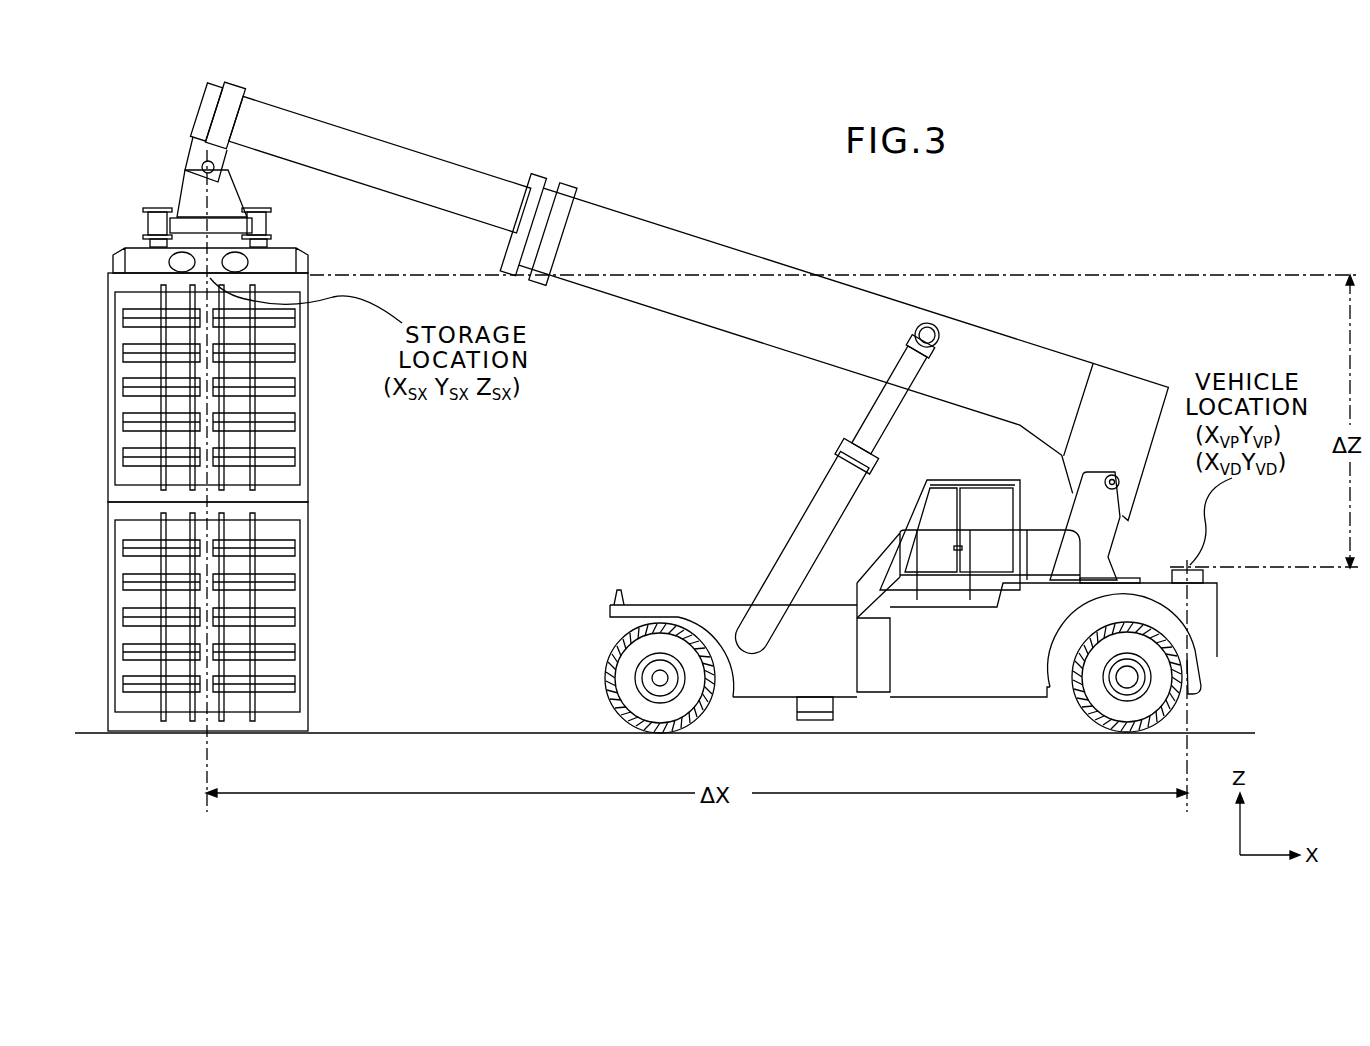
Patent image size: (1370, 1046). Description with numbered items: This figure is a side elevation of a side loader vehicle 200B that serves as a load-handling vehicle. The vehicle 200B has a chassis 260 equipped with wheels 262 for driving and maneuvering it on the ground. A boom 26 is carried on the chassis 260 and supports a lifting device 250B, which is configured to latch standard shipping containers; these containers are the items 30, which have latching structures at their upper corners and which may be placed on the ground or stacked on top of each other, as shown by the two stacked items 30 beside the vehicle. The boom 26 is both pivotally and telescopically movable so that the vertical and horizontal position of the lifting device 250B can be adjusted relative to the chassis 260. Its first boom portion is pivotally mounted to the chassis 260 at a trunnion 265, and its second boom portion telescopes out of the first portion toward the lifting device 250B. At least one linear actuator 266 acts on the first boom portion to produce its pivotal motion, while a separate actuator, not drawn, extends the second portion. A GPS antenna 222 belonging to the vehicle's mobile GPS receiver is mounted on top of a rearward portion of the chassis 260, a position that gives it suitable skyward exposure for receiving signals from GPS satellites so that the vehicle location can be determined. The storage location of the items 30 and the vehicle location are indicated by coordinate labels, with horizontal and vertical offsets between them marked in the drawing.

The lifting device 250B is at (112, 259).
The item 30 is at (308, 440).
The side loader vehicle 200B is at (1040, 255).
The boom 26 is at (634, 220).
The trunnion 265 is at (1112, 474).
The linear actuator 266 is at (795, 537).
The chassis 260 is at (938, 665).
The wheels 262 is at (605, 683).
The GPS antenna 222 is at (1198, 567).